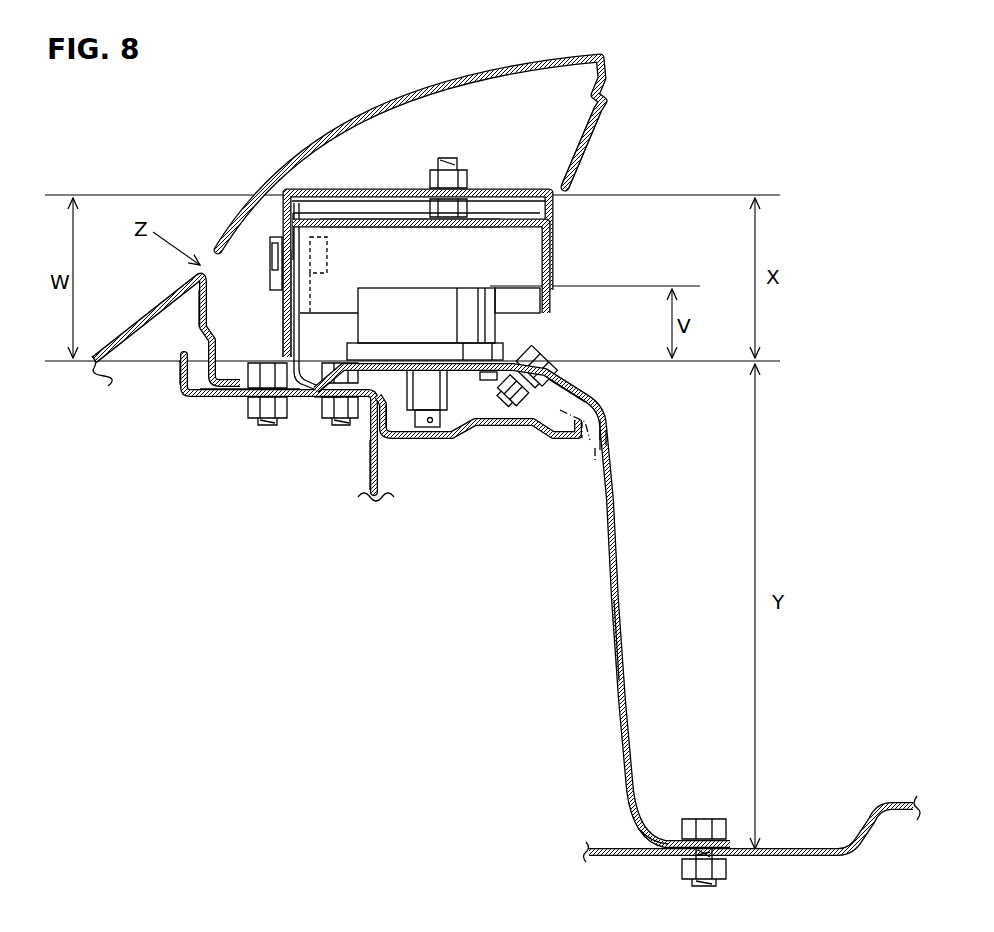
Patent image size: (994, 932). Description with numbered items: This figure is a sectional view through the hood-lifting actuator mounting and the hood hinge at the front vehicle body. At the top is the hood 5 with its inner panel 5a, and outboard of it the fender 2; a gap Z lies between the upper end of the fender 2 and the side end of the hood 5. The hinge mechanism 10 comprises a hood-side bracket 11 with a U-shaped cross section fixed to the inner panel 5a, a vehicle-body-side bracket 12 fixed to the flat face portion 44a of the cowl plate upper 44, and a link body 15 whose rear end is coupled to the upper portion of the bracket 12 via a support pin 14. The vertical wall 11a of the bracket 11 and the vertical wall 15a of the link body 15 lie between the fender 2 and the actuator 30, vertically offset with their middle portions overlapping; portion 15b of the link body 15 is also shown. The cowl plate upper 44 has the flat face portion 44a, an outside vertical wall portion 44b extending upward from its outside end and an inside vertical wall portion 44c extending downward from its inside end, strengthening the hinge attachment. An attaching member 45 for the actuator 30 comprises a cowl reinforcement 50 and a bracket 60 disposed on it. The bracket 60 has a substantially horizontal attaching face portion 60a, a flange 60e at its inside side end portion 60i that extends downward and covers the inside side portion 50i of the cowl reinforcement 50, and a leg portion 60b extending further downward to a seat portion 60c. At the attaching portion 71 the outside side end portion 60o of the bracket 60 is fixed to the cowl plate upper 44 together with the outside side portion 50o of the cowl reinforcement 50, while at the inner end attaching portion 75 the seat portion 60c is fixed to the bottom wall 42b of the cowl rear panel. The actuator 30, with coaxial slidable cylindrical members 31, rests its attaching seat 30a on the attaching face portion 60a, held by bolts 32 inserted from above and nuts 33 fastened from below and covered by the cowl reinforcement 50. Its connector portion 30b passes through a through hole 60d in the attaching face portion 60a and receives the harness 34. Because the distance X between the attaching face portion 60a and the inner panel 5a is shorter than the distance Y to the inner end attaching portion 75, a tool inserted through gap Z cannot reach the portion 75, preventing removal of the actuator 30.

The fender 2 is at (143, 303).
The hood 5 is at (370, 97).
The inner panel 5a is at (598, 140).
The hinge mechanism 10 is at (200, 323).
The hood-side bracket 11 is at (557, 240).
The vertical wall 11a is at (270, 235).
The vehicle-body-side bracket 12 is at (303, 337).
The support pin 14 is at (270, 307).
The link body 15 is at (550, 305).
The vertical wall 15a is at (285, 313).
The cushion member horizontal portion 15b is at (347, 230).
The actuator 30 is at (487, 283).
The attaching seat 30a is at (513, 357).
The connector portion 30b is at (417, 412).
The cylindrical member 31 is at (430, 290).
The bolt 32 is at (550, 361).
The nut 33 is at (520, 370).
The harness 34 is at (440, 425).
The bottom wall 42b is at (809, 848).
The cowl plate upper 44 is at (198, 405).
The flat face portion 44a is at (240, 397).
The outside vertical wall portion 44b is at (178, 378).
The inside vertical wall portion 44c is at (370, 473).
The attaching member 45 is at (613, 403).
The cowl reinforcement 50 is at (533, 440).
The inside side portion 50i is at (573, 441).
The outside side portion 50o is at (313, 397).
The bracket 60 is at (615, 534).
The attaching face portion 60a is at (558, 397).
The leg portion 60b is at (618, 629).
The seat portion 60c is at (666, 842).
The through hole 60d is at (370, 413).
The flange 60e is at (605, 433).
The inside side end portion 60i is at (671, 429).
The outside side end portion 60o is at (314, 382).
The attaching portion 71 is at (323, 420).
The inner end attaching portion 75 is at (703, 812).